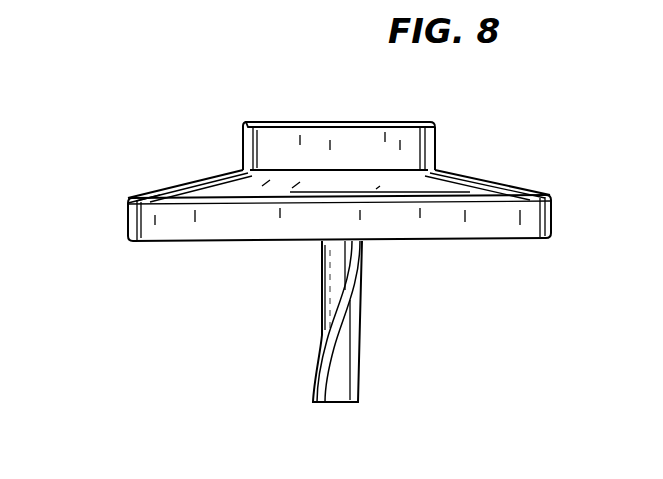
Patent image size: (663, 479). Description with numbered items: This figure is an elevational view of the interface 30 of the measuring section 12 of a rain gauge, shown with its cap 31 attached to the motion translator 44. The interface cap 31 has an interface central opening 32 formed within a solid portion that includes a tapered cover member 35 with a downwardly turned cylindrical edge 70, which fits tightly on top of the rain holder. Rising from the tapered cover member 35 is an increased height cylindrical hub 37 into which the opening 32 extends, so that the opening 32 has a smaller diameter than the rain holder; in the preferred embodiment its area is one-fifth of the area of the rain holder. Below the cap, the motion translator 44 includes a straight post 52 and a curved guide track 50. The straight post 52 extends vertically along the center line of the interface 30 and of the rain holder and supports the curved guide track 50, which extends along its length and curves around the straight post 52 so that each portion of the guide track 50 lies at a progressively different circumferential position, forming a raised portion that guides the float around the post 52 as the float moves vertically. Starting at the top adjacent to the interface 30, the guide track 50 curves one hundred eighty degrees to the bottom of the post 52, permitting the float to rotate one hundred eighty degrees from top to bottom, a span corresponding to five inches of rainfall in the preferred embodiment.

The interface 30 is at (78, 125).
The measuring section 12 is at (164, 175).
The interface central opening 32 is at (354, 118).
The increased height cylindrical hub 37 is at (244, 151).
The interface cap 31 is at (448, 152).
The downwardly turned cylindrical edge 70 is at (553, 217).
The tapered cover member 35 is at (158, 188).
The motion translator 44 is at (363, 369).
The curved guide track 50 is at (363, 269).
The straight post 52 is at (336, 277).